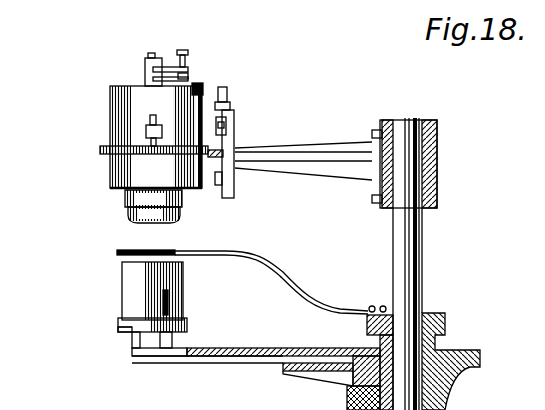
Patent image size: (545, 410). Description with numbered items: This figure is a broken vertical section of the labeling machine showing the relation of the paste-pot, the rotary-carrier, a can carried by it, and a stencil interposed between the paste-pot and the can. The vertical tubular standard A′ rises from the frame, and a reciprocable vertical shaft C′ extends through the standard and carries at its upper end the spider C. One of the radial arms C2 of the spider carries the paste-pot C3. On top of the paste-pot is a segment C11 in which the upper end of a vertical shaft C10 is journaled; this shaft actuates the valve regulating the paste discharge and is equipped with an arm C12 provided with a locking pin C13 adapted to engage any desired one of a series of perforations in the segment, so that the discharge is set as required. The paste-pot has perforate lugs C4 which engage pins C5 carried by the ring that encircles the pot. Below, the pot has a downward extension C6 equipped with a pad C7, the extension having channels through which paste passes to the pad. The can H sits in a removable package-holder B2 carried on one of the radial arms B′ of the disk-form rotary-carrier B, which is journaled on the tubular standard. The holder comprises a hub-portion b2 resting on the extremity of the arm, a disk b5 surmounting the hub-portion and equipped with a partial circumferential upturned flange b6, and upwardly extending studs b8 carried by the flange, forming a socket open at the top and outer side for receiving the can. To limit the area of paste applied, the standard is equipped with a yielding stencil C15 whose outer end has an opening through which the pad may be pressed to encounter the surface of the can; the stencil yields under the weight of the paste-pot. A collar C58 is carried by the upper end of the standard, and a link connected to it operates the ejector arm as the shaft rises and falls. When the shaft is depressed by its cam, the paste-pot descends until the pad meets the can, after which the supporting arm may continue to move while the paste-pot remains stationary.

The spider C is at (252, 97).
The reciprocable vertical shaft C′ is at (402, 128).
The arm of the spider C2 is at (327, 149).
The paste-pot C3 is at (97, 177).
The perforate lugs C4 is at (146, 130).
The pins C5 is at (150, 122).
The downward extension C6 is at (125, 199).
The pad C7 is at (136, 217).
The vertical shaft C10 is at (155, 56).
The segment C11 is at (190, 81).
The arm C12 is at (171, 72).
The locking pin C13 is at (190, 52).
The yielding stencil C15 is at (251, 270).
The collar C58 is at (444, 321).
The vertical tubular standard A′ is at (427, 315).
The block H is at (137, 283).
The rotary-carrier B is at (247, 350).
The radial arms B′ is at (230, 361).
The removable package-holder B2 is at (150, 332).
The hub-portion b2 is at (137, 342).
The disk b5 is at (118, 331).
The partial circumferential upturned flange b6 is at (147, 325).
The upwardly extending studs b8 is at (168, 296).